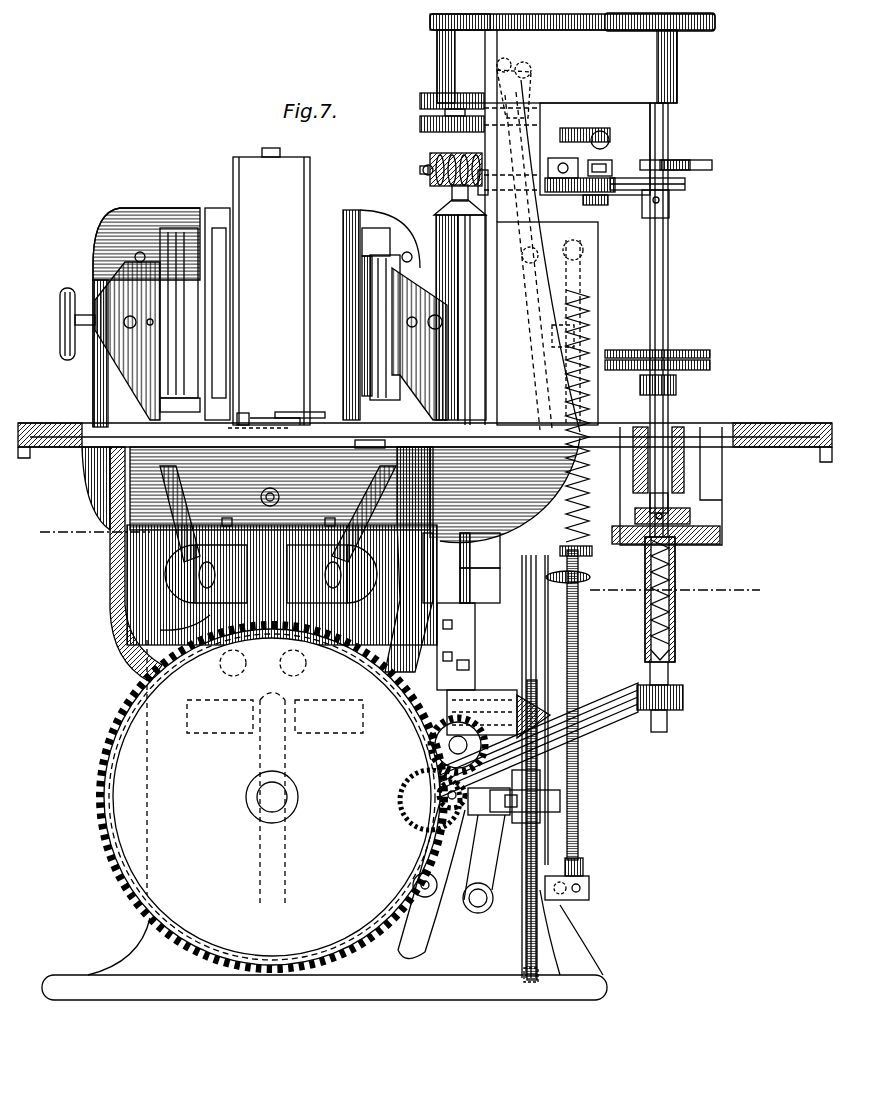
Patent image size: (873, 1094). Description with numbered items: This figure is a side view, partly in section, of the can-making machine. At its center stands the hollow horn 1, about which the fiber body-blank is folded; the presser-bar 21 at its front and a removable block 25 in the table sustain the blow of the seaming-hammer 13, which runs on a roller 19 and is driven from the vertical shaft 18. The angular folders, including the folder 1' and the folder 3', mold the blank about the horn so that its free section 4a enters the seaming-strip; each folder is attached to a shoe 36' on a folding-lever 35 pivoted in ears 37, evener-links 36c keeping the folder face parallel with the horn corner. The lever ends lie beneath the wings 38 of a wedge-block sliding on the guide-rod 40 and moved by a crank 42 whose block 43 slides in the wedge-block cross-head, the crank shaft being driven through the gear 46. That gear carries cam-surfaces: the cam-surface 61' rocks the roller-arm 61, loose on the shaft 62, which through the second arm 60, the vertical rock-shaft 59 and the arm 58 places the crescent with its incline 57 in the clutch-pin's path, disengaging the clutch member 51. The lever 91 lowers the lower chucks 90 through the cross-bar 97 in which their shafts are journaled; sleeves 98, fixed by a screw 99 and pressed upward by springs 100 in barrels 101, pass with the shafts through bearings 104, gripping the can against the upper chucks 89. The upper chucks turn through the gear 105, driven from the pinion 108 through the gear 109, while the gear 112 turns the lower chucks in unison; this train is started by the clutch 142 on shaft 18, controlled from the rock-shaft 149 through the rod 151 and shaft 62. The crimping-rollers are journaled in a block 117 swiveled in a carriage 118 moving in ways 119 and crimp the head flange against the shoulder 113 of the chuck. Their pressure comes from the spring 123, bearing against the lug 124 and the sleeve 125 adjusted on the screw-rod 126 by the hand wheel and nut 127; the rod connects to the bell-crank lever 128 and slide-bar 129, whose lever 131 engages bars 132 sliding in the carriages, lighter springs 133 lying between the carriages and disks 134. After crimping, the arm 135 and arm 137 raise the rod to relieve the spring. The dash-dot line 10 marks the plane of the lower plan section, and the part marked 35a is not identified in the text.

The horn 1 is at (279, 286).
The angular folder 1' is at (146, 300).
The angular folder 3' is at (332, 241).
The free section 4a is at (438, 226).
The section line 10 is at (398, 562).
The hammer 13 is at (348, 215).
The vertical shaft 18 is at (466, 202).
The roller 19 is at (365, 440).
The presser-bar 21 is at (215, 210).
The removable block 25 is at (246, 417).
The folding-lever 35 is at (132, 590).
The frame wall 35a is at (428, 608).
The shoe 36' is at (280, 320).
The evener-link 36c is at (172, 515).
The ear 37 is at (271, 574).
The wing 38 is at (205, 613).
The guide-rod 40 is at (262, 862).
The crank 42 is at (255, 752).
The block 43 is at (298, 712).
The gear 46 is at (118, 778).
The clutch member 51 is at (480, 585).
The incline 57 is at (530, 545).
The arm 58 is at (520, 548).
The vertical rock-shaft 59 is at (528, 620).
The second arm 60 is at (548, 790).
The roller-arm 61 is at (570, 831).
The cam-surface 61' is at (237, 797).
The shaft 62 is at (458, 908).
The upper chuck 89 is at (712, 163).
The lower chuck 90 is at (712, 352).
The lever 91 is at (615, 690).
The cross-bar 97 is at (648, 385).
The sleeve 98 is at (668, 507).
The screw 99 is at (690, 530).
The spring 100 is at (677, 630).
The barrel 101 is at (677, 655).
The bearing 104 is at (680, 468).
The gear 105 is at (712, 27).
The pinion 108 is at (430, 24).
The gear 109 is at (560, 30).
The gear 112 is at (712, 368).
The shoulder 113 is at (712, 172).
The block 117 is at (606, 160).
The carriage 118 is at (605, 192).
The ways 119 is at (548, 143).
The spring 123 is at (585, 492).
The lug 124 is at (582, 330).
The sleeve 125 is at (580, 546).
The screw-rod 126 is at (575, 646).
The hand wheel and nut 127 is at (586, 574).
The bell-crank lever 128 is at (575, 262).
The slide-bar 129 is at (676, 190).
The lever 131 is at (562, 158).
The bar 132 is at (452, 190).
The spring 133 is at (440, 160).
The disk 134 is at (430, 172).
The arm 135 is at (568, 900).
The arm 137 is at (478, 913).
The clutch 142 is at (428, 108).
The rock-shaft 149 is at (528, 74).
The rod 151 is at (533, 318).